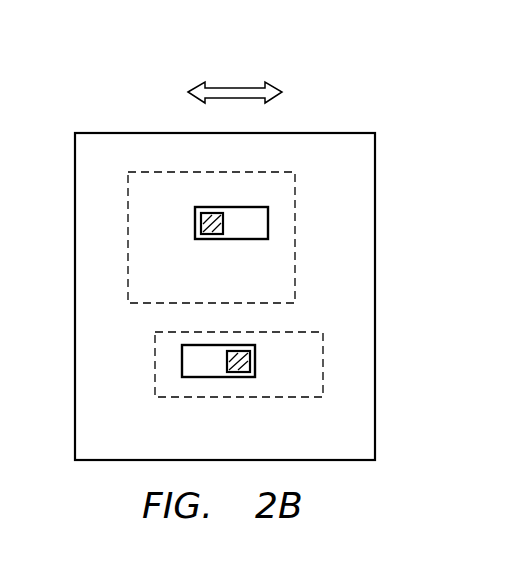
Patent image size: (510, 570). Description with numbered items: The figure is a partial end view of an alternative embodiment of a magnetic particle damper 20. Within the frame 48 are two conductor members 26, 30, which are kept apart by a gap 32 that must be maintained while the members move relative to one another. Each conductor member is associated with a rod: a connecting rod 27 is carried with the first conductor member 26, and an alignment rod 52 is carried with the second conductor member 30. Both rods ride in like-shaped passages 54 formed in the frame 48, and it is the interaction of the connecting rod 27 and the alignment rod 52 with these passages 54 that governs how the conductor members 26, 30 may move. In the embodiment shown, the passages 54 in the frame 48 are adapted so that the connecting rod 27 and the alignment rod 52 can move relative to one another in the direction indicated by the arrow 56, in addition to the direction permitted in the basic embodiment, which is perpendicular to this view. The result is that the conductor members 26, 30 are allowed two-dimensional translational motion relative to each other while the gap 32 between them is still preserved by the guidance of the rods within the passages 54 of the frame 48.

The magnetic particle damper 20 is at (313, 108).
The conductor member 26 is at (296, 218).
The connecting rod 27 is at (200, 228).
The conductor member 30 is at (156, 372).
The gap 32 is at (150, 313).
The frame 48 is at (108, 131).
The alignment rod 52 is at (250, 355).
The passages 54 is at (267, 222).
The arrow 56 is at (240, 87).